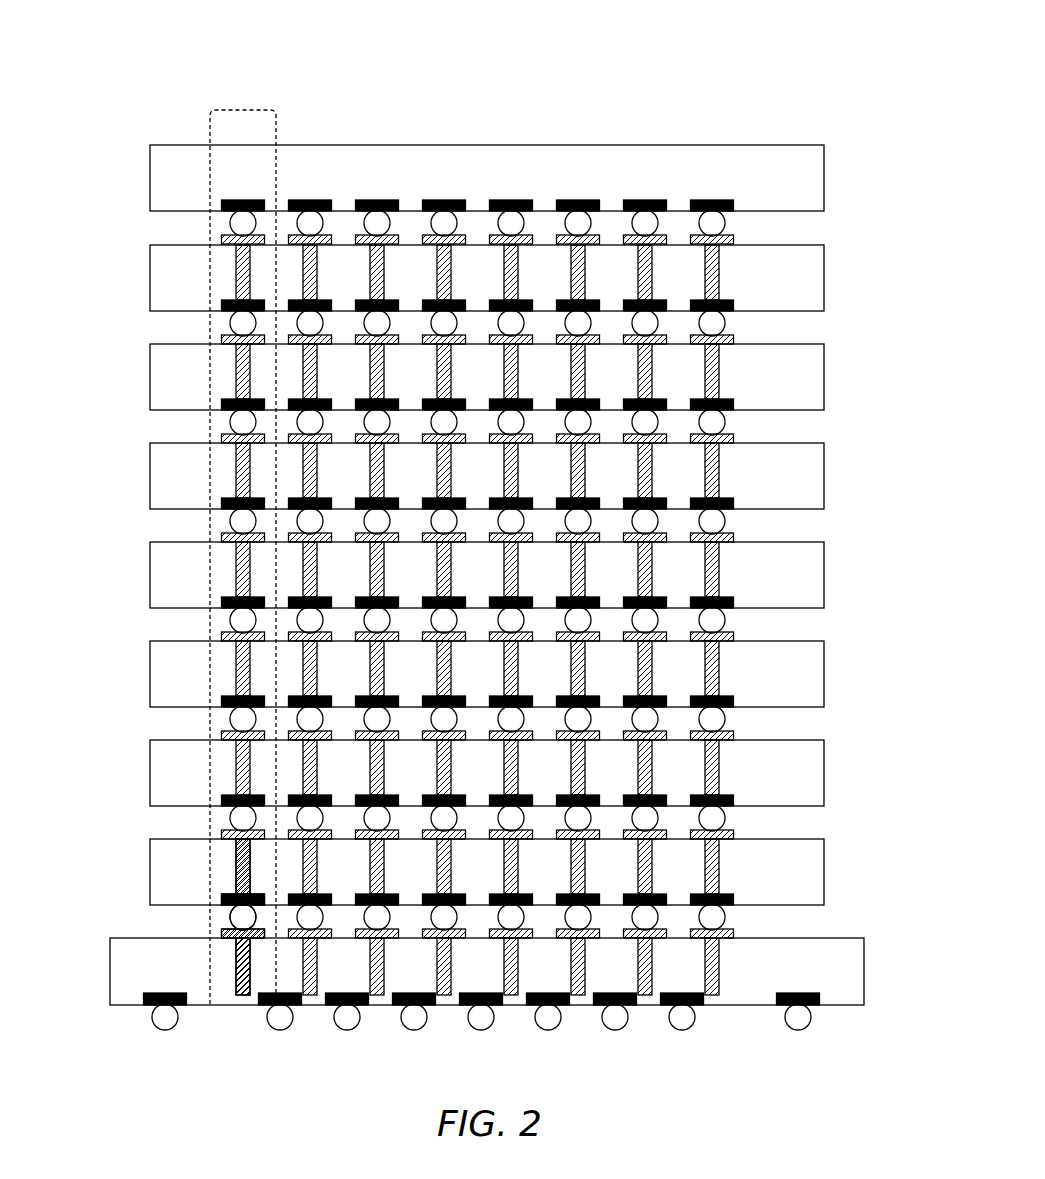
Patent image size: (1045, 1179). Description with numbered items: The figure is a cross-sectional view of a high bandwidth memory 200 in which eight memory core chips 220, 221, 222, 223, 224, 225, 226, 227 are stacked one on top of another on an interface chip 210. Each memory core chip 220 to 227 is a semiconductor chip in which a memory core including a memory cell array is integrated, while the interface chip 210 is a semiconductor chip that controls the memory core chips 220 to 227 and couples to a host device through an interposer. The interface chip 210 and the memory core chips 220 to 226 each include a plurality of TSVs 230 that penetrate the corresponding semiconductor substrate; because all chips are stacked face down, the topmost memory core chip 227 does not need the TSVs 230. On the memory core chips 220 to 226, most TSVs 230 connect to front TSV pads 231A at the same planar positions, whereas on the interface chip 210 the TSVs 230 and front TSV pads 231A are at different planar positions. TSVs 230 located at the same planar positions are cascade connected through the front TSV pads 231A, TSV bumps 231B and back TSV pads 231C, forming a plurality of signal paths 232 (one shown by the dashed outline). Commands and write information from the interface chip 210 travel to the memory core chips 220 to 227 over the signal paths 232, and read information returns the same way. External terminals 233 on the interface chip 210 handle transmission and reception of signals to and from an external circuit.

The high bandwidth memory 200 is at (144, 31).
The interface chip 210 is at (864, 970).
The memory core chip 220 is at (824, 872).
The memory core chip 221 is at (824, 773).
The memory core chip 222 is at (824, 674).
The memory core chip 223 is at (824, 575).
The memory core chip 224 is at (824, 476).
The memory core chip 225 is at (824, 377).
The memory core chip 226 is at (824, 278).
The memory core chip 227 is at (824, 178).
The TSV 230 is at (237, 868).
The front TSV pad 231A is at (237, 896).
The TSV bump 231B is at (230, 918).
The back TSV pad 231C is at (220, 932).
The signal path 232 is at (240, 108).
The external terminal 233 is at (280, 1030).